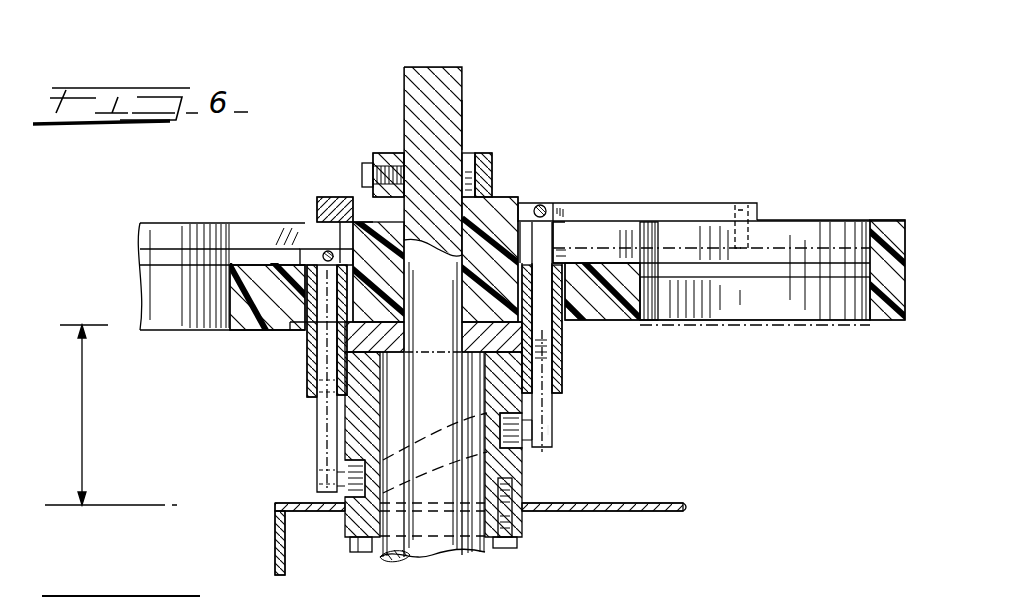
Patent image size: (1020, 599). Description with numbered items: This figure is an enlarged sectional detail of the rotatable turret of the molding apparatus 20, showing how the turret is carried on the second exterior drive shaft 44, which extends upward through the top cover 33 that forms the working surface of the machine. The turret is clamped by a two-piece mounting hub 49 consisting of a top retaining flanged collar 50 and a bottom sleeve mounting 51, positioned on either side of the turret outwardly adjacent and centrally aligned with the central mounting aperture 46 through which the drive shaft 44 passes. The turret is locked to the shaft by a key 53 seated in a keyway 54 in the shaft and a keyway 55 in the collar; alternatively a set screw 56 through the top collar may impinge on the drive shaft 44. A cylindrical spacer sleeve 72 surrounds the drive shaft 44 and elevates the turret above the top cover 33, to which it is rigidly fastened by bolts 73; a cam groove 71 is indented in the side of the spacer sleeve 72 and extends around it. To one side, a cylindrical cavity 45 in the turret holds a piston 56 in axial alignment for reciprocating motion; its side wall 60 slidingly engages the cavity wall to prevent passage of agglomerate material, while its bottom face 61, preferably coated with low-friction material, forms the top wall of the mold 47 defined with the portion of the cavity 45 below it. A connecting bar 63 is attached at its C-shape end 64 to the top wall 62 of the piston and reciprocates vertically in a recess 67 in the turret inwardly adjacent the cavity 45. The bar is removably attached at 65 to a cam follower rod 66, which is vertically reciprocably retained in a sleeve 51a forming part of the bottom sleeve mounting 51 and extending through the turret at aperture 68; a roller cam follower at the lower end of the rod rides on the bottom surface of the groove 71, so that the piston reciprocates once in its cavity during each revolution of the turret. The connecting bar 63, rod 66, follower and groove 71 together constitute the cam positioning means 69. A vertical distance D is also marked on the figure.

The second exterior drive shaft 44 is at (430, 78).
The keyway 54 is at (465, 150).
The key 53 is at (470, 176).
The keyway 55 is at (485, 186).
The piston barrier means 56 is at (366, 162).
The mounting hub 49 is at (356, 196).
The top retaining flanged collar 50 is at (492, 203).
The attachment 65 is at (560, 208).
The connecting bar 63 is at (591, 210).
The recess 67 is at (630, 235).
The C-shape end 64 is at (695, 212).
The top wall 62 is at (772, 220).
The side wall 60 is at (897, 240).
The sleeve 51a is at (583, 322).
The aperture 68 is at (303, 333).
The cavity 45 is at (656, 322).
The mold 47 is at (710, 341).
The bottom face 61 is at (784, 290).
The bottom sleeve mounting 51 is at (553, 345).
The cam follower rod 66 is at (540, 404).
The cam positioning means 69 is at (567, 433).
The molding apparatus 20 is at (552, 440).
The cam groove 71 is at (512, 452).
The top cover 33 is at (622, 502).
The bolts 73 is at (362, 552).
The cylindrical spacer sleeve 72 is at (360, 430).
The central mounting aperture 46 is at (340, 355).
The distance D is at (111, 415).